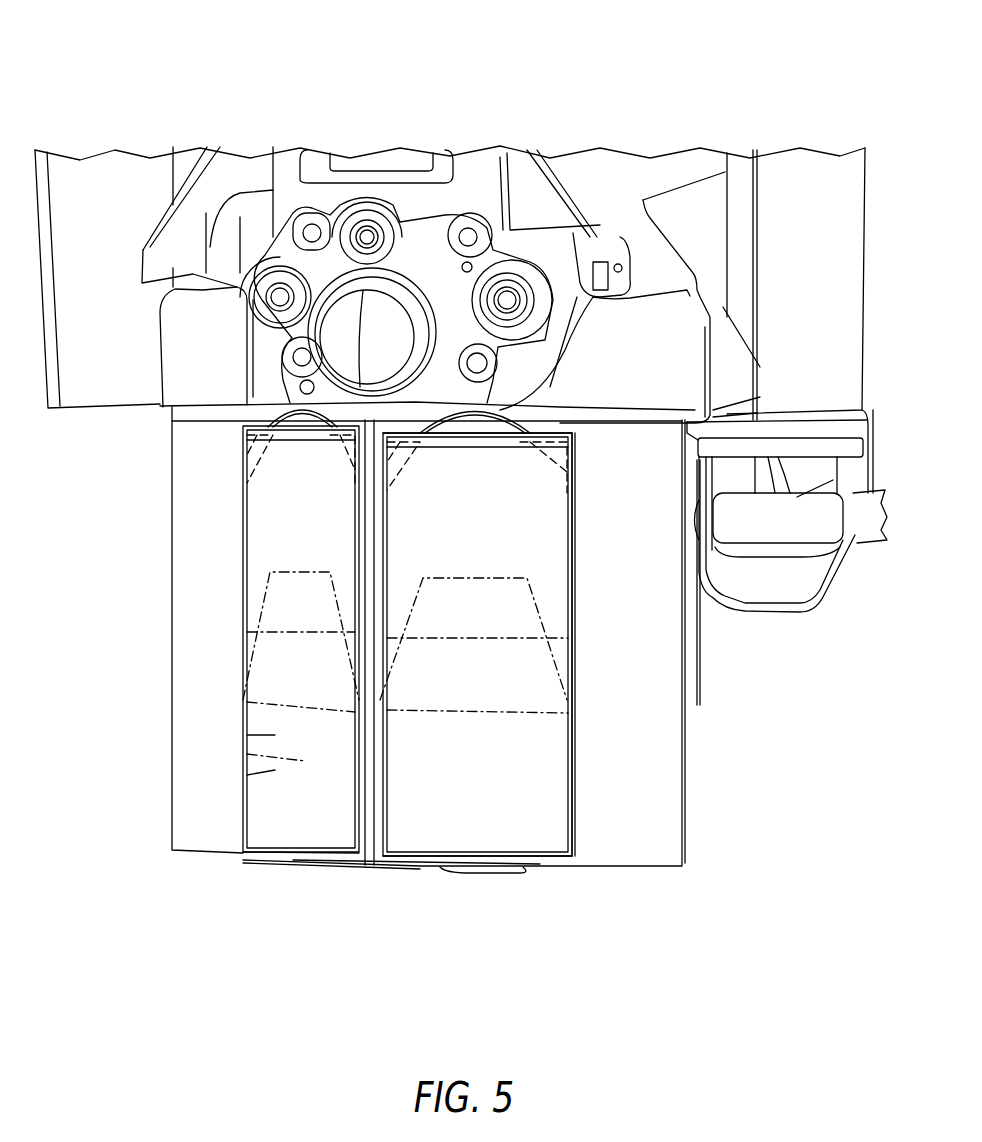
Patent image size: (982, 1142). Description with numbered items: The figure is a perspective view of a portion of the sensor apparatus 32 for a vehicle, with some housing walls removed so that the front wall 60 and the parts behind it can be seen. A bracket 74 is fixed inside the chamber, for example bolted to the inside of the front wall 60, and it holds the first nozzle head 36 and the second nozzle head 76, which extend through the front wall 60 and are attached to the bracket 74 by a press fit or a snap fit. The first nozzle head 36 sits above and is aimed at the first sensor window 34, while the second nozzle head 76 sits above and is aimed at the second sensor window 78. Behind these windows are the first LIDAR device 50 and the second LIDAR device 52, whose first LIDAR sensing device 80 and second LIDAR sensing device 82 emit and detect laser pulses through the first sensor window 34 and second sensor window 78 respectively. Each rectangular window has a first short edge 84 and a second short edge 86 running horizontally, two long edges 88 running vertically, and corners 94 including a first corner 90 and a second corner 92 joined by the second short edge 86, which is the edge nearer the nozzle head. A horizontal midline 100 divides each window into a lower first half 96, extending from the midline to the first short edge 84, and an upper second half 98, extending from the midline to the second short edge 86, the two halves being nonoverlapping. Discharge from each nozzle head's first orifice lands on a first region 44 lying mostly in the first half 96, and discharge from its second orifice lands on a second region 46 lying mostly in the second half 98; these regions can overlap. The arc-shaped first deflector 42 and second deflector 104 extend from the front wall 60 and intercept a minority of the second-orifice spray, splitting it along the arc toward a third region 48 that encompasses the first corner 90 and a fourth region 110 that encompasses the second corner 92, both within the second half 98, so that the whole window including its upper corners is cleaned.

The sensor apparatus 32 is at (214, 68).
The first sensor window 34 is at (540, 783).
The first nozzle head 36 is at (507, 300).
The first deflector 42 is at (567, 345).
The first region 44 is at (293, 860).
The second region 46 is at (573, 527).
The third region 48 is at (420, 482).
The first LIDAR device 50 is at (414, 872).
The second LIDAR device 52 is at (323, 872).
The front wall 60 is at (640, 850).
The bracket 74 is at (637, 328).
The second nozzle head 76 is at (278, 300).
The second sensor window 78 is at (270, 735).
The first LIDAR sensing device 80 is at (697, 708).
The second LIDAR sensing device 82 is at (247, 754).
The first short edge 84 is at (263, 856).
The second short edge 86 is at (262, 428).
The long edges 88 is at (243, 550).
The first corner 90 is at (373, 430).
The second corner 92 is at (355, 430).
The corners 94 is at (235, 856).
The first half 96 is at (275, 770).
The second half 98 is at (270, 490).
The horizontal midline 100 is at (290, 632).
The second deflector 104 is at (290, 400).
The fourth region 110 is at (572, 458).